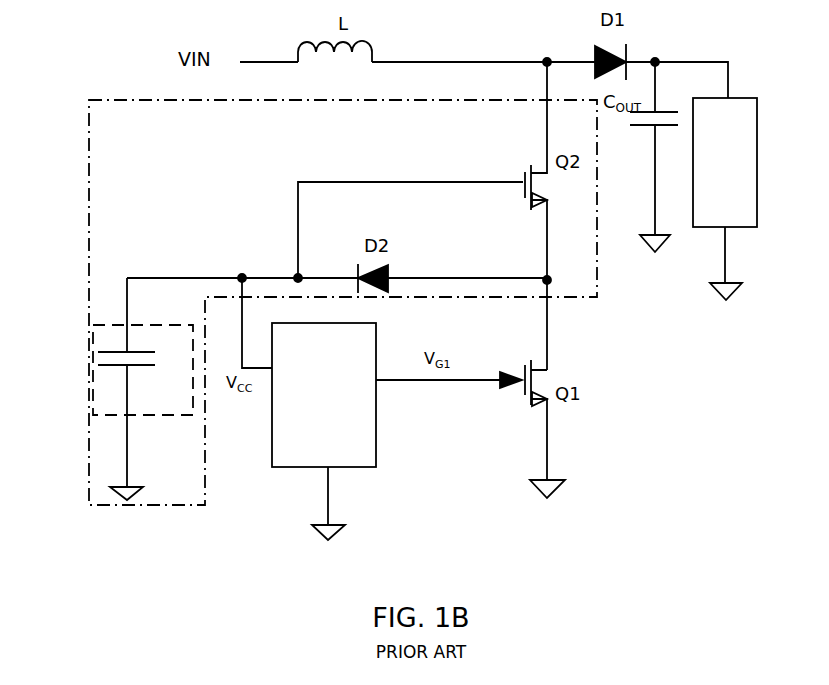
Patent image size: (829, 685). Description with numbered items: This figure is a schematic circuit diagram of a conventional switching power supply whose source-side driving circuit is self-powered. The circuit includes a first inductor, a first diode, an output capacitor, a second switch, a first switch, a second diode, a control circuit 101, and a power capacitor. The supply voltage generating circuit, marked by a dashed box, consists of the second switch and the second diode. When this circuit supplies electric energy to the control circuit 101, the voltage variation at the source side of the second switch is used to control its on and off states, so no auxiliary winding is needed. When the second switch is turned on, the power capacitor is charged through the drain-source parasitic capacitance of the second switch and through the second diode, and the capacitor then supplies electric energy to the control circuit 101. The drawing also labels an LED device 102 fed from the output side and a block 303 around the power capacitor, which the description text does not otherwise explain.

The control circuit 101 is at (324, 431).
The LED device 102 is at (725, 199).
The Vcc capacitor (Cvcc) block 303 is at (107, 417).